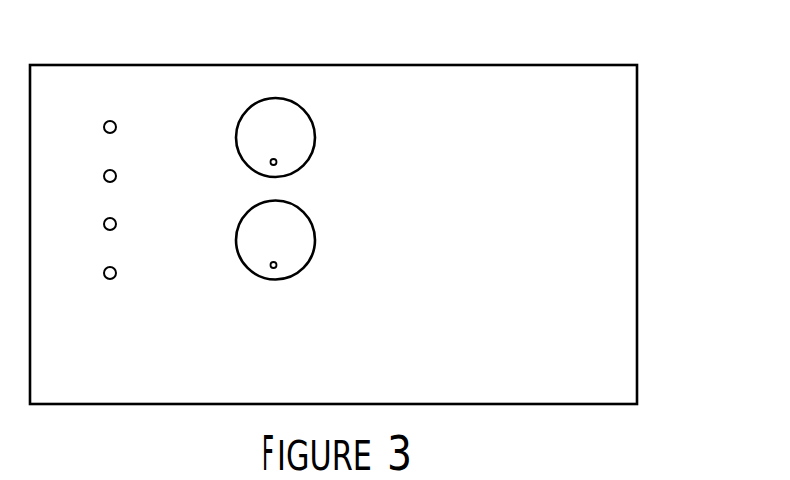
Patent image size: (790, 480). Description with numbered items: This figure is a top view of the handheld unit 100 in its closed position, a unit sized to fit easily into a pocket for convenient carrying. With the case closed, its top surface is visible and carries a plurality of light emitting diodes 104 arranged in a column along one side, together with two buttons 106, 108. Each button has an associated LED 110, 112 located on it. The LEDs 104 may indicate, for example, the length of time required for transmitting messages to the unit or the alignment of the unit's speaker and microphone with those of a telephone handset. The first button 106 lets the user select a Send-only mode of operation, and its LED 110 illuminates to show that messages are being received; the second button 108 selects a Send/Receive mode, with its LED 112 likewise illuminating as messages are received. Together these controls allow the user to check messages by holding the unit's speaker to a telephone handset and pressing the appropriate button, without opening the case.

The handheld unit 100 is at (606, 44).
The light emitting diodes 104 is at (103, 125).
The first button 106 is at (315, 125).
The second button 108 is at (315, 237).
The LED 110 is at (270, 162).
The LED 112 is at (271, 266).